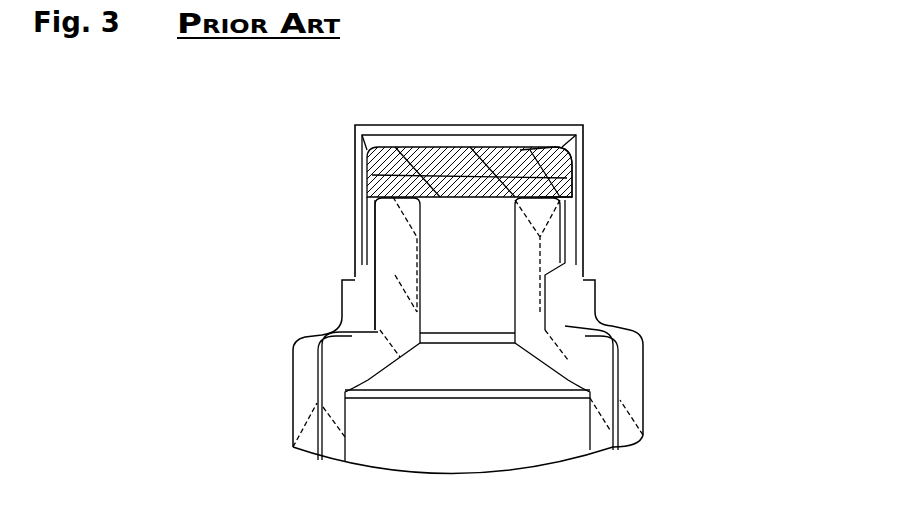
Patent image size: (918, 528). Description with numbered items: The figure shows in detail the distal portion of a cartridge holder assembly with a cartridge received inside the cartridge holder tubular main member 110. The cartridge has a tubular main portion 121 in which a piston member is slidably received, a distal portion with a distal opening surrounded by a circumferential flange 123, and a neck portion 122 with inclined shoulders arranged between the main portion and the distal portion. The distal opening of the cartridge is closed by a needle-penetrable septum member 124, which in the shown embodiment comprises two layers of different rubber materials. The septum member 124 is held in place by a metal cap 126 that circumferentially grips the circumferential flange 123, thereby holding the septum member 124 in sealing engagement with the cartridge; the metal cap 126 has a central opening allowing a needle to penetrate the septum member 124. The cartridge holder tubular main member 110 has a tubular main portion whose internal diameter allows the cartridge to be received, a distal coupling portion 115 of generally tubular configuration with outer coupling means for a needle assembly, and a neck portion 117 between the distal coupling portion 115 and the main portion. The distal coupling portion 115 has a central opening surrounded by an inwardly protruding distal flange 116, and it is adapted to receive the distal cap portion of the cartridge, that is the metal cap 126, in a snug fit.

The cartridge holder tubular main member 110 is at (632, 420).
The distal coupling portion 115 is at (583, 195).
The inwardly protruding distal flange 116 is at (548, 146).
The neck portion 117 is at (617, 322).
The tubular main portion 121 is at (600, 438).
The neck portion 122 is at (587, 363).
The circumferential flange 123 is at (387, 238).
The needle-penetrable septum member 124 is at (445, 148).
The metal cap 126 is at (365, 205).